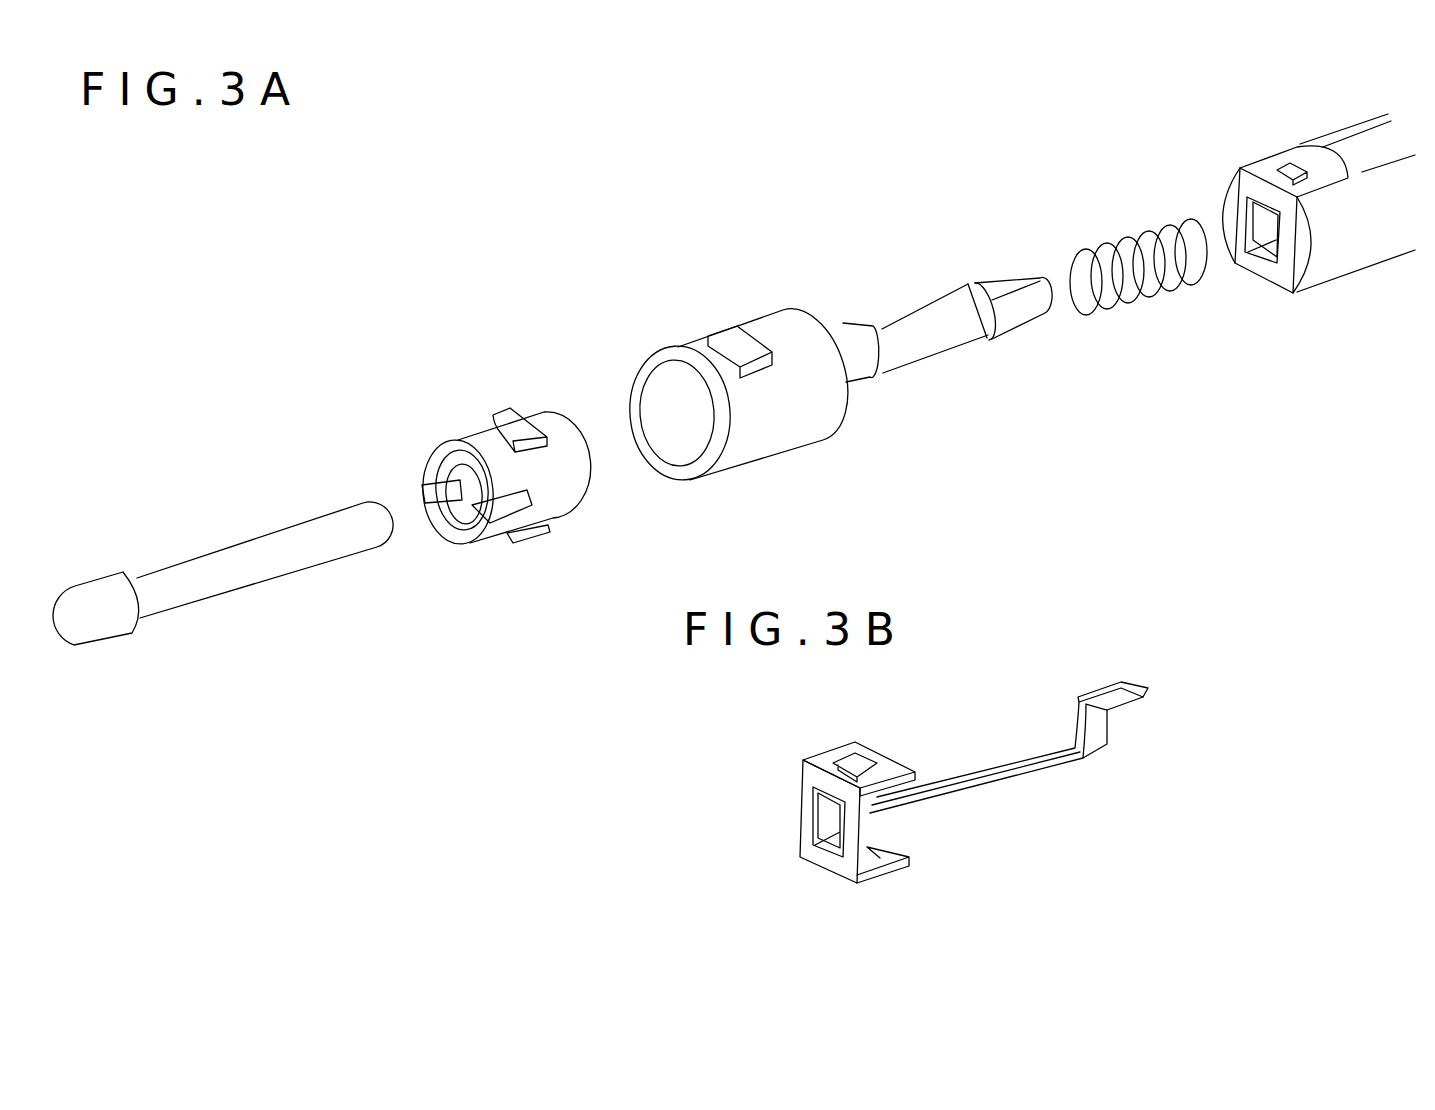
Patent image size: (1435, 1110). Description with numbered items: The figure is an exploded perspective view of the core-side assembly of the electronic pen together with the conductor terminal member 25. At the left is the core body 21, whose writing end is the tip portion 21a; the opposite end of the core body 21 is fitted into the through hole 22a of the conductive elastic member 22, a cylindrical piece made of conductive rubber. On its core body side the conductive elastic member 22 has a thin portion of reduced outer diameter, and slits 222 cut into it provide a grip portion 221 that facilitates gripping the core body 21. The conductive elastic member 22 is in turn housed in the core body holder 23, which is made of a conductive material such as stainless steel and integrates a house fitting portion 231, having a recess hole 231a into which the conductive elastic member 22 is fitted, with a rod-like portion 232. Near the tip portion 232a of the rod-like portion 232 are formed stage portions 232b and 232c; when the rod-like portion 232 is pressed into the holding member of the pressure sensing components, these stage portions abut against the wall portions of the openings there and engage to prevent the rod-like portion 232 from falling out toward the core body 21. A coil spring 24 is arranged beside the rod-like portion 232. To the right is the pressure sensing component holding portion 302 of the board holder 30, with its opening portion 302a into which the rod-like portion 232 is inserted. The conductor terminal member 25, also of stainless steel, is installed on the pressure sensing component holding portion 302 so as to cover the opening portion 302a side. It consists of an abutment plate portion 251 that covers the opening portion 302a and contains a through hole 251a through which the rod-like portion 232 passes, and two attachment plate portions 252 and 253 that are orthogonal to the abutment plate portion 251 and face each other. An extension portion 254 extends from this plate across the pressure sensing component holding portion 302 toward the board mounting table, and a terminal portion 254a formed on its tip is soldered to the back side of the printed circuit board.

In FIG. 3A, the core body 21 is at (171, 585).
In FIG. 3A, the tip portion 21a is at (95, 588).
In FIG. 3A, the conductive elastic member 22 is at (475, 490).
In FIG. 3A, the grip portion 221 is at (455, 440).
In FIG. 3A, the slits 222 is at (427, 484).
In FIG. 3A, the through hole 22a is at (452, 512).
In FIG. 3A, the core body holder 23 is at (838, 379).
In FIG. 3A, the house fitting portion 231 is at (748, 445).
In FIG. 3A, the recess hole 231a is at (667, 394).
In FIG. 3A, the rod-like portion 232 is at (908, 352).
In FIG. 3A, the tip portion 232a is at (1020, 310).
In FIG. 3A, the stage portion 232b is at (968, 292).
In FIG. 3A, the stage portion 232c is at (987, 343).
In FIG. 3A, the coil spring 24 is at (1160, 296).
In FIG. 3B, the conductor terminal member 25 is at (930, 798).
In FIG. 3A, the abutment plate portion 251 is at (1250, 183).
In FIG. 3B, the abutment plate portion 251 is at (808, 782).
In FIG. 3A, the through hole 251a is at (1263, 223).
In FIG. 3B, the through hole 251a is at (830, 827).
In FIG. 3A, the attachment plate portion 252 is at (1260, 166).
In FIG. 3B, the attachment plate portion 252 is at (830, 752).
In FIG. 3B, the attachment plate portion 253 is at (890, 858).
In FIG. 3B, the extension portion 254 is at (1050, 763).
In FIG. 3B, the terminal portion 254a is at (1112, 680).
In FIG. 3A, the board holder 30 is at (1277, 228).
In FIG. 3A, the pressure sensing component holding portion 302 is at (1350, 253).
In FIG. 3A, the opening portion 302a is at (1305, 270).